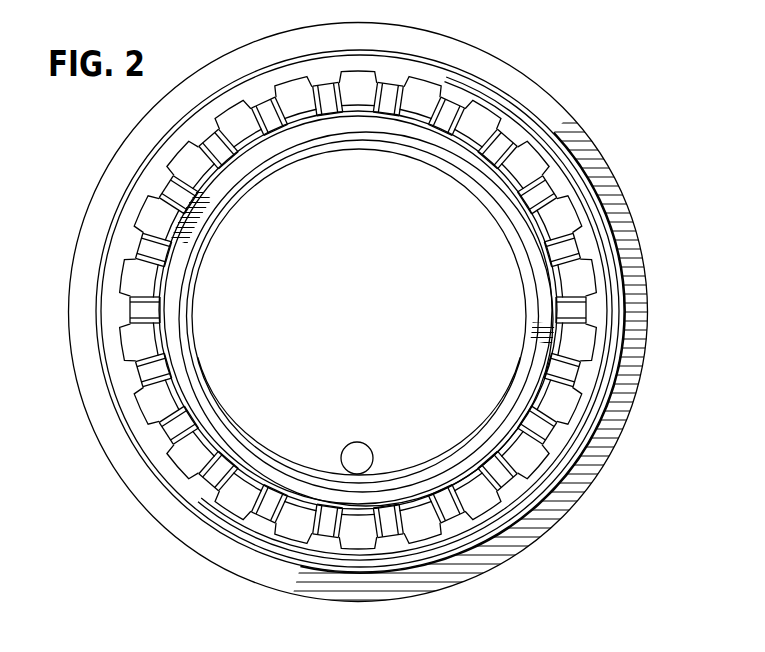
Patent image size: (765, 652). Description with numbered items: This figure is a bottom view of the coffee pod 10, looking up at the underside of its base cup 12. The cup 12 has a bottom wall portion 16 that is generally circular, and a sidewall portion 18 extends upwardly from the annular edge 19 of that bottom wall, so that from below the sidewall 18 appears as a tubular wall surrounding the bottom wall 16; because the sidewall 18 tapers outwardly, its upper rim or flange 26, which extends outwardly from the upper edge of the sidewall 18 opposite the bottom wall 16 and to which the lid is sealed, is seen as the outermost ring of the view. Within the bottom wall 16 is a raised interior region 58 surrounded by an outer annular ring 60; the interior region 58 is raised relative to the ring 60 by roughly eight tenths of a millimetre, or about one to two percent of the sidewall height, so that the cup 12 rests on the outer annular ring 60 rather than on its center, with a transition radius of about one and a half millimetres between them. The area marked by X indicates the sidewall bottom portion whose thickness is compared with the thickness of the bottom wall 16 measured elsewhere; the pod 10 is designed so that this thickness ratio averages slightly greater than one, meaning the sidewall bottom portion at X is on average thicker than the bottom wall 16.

The coffee pod 10 is at (616, 77).
The base cup 12 is at (598, 318).
The bottom wall portion 16 is at (180, 512).
The sidewall portion 18 is at (486, 120).
The edge 19 is at (157, 282).
The upper rim or flange 26 is at (115, 420).
The raised interior region 58 is at (440, 284).
The outer annular ring 60 is at (520, 402).
The area marked by X is at (368, 469).